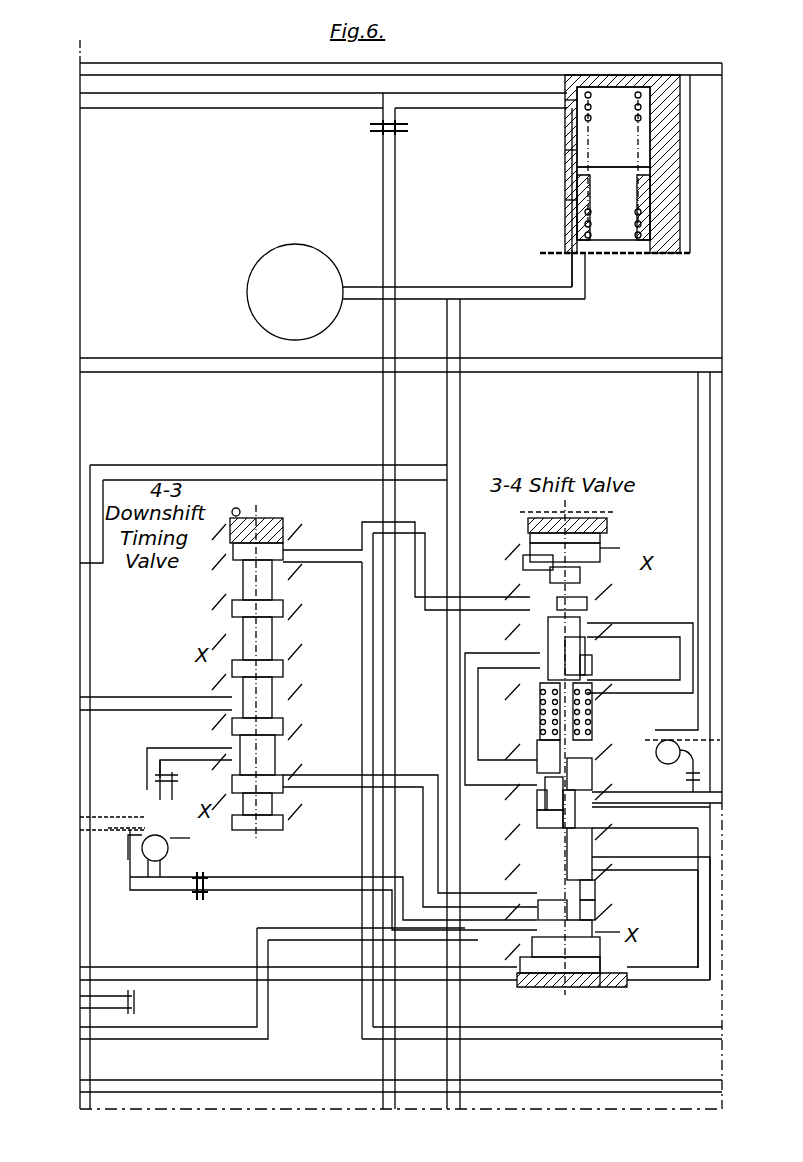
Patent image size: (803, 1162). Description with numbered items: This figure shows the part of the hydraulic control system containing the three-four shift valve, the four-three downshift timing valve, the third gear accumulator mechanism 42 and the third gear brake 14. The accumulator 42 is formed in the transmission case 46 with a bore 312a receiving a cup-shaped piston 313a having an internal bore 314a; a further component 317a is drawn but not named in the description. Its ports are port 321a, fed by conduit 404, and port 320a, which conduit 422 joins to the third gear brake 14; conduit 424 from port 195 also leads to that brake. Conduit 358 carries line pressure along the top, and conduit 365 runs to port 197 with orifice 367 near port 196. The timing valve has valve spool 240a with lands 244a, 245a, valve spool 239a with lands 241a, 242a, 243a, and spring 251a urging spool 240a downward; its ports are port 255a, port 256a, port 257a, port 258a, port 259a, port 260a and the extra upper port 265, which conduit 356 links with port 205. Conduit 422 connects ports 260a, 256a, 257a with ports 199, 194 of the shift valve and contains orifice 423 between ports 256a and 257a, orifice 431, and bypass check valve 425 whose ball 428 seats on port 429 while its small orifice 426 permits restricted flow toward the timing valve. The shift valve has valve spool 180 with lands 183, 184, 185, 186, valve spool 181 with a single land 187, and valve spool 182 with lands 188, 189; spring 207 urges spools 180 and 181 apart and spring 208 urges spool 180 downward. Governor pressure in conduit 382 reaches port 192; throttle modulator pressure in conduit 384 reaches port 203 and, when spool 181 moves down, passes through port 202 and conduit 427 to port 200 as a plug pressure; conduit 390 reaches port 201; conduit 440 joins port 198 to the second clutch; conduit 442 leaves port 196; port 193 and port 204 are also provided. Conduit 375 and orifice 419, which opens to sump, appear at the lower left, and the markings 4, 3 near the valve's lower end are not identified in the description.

The conduit 358 is at (186, 76).
The conduit 404 is at (260, 104).
The port 321a is at (568, 102).
The accumulator spring 317a is at (642, 117).
The third gear accumulator mechanism 42 is at (562, 187).
The bore 312a is at (572, 148).
The piston 313a is at (572, 212).
The internal bore 314a is at (650, 200).
The third gear brake 14 is at (416, 283).
The port 320a is at (580, 258).
The transmission case 46 is at (690, 242).
The conduit 424 is at (495, 292).
The conduit 365 is at (182, 364).
The conduit 384 is at (130, 470).
The spring 251a is at (242, 516).
The port 265 is at (284, 530).
The valve spool 240a is at (222, 570).
The land 245a is at (285, 590).
The port 260a is at (228, 612).
The land 244a is at (280, 640).
The port 259a is at (284, 668).
The port 258a is at (225, 702).
The land 243a is at (282, 692).
The valve spool 239a is at (288, 726).
The port 257a is at (232, 752).
The land 242a is at (283, 748).
The port 256a is at (284, 778).
The orifice 426 is at (108, 828).
The orifice 423 is at (172, 790).
The land 241a is at (276, 800).
The port 255a is at (284, 822).
The port 429 is at (180, 835).
The ball 428 is at (168, 850).
The bypass check valve 425 is at (163, 872).
The orifice 431 is at (208, 893).
The conduit 422 is at (405, 778).
The conduit 382 is at (204, 968).
The orifice 419 is at (132, 1003).
The conduit 390 is at (196, 1032).
The conduit 375 is at (270, 1085).
The conduit 356 is at (520, 514).
The port 205 is at (608, 524).
The valve spool 182 is at (610, 550).
The port 204 is at (608, 558).
The land 189 is at (530, 540).
The land 188 is at (523, 566).
The port 203 is at (590, 600).
The port 202 is at (592, 622).
The land 187 is at (548, 652).
The valve spool 181 is at (596, 652).
The port 201 is at (595, 668).
The conduit 427 is at (690, 660).
The spring 207 is at (535, 700).
The spring 208 is at (535, 722).
The port 200 is at (595, 690).
The land 186 is at (537, 752).
The valve spool 180 is at (602, 770).
The orifice 367 is at (700, 770).
The conduit 440 is at (705, 800).
The port 199 is at (540, 782).
The port 198 is at (537, 805).
The port 197 is at (540, 826).
The port 196 is at (536, 864).
The land 185 is at (600, 858).
The conduit 442 is at (708, 880).
The port 195 is at (596, 890).
The port 194 is at (596, 910).
The land 184 is at (540, 912).
The port 193 is at (540, 945).
The land 183 is at (530, 973).
The port 192 is at (612, 978).
The passage 4 is at (551, 1005).
The passage 3 is at (580, 1005).